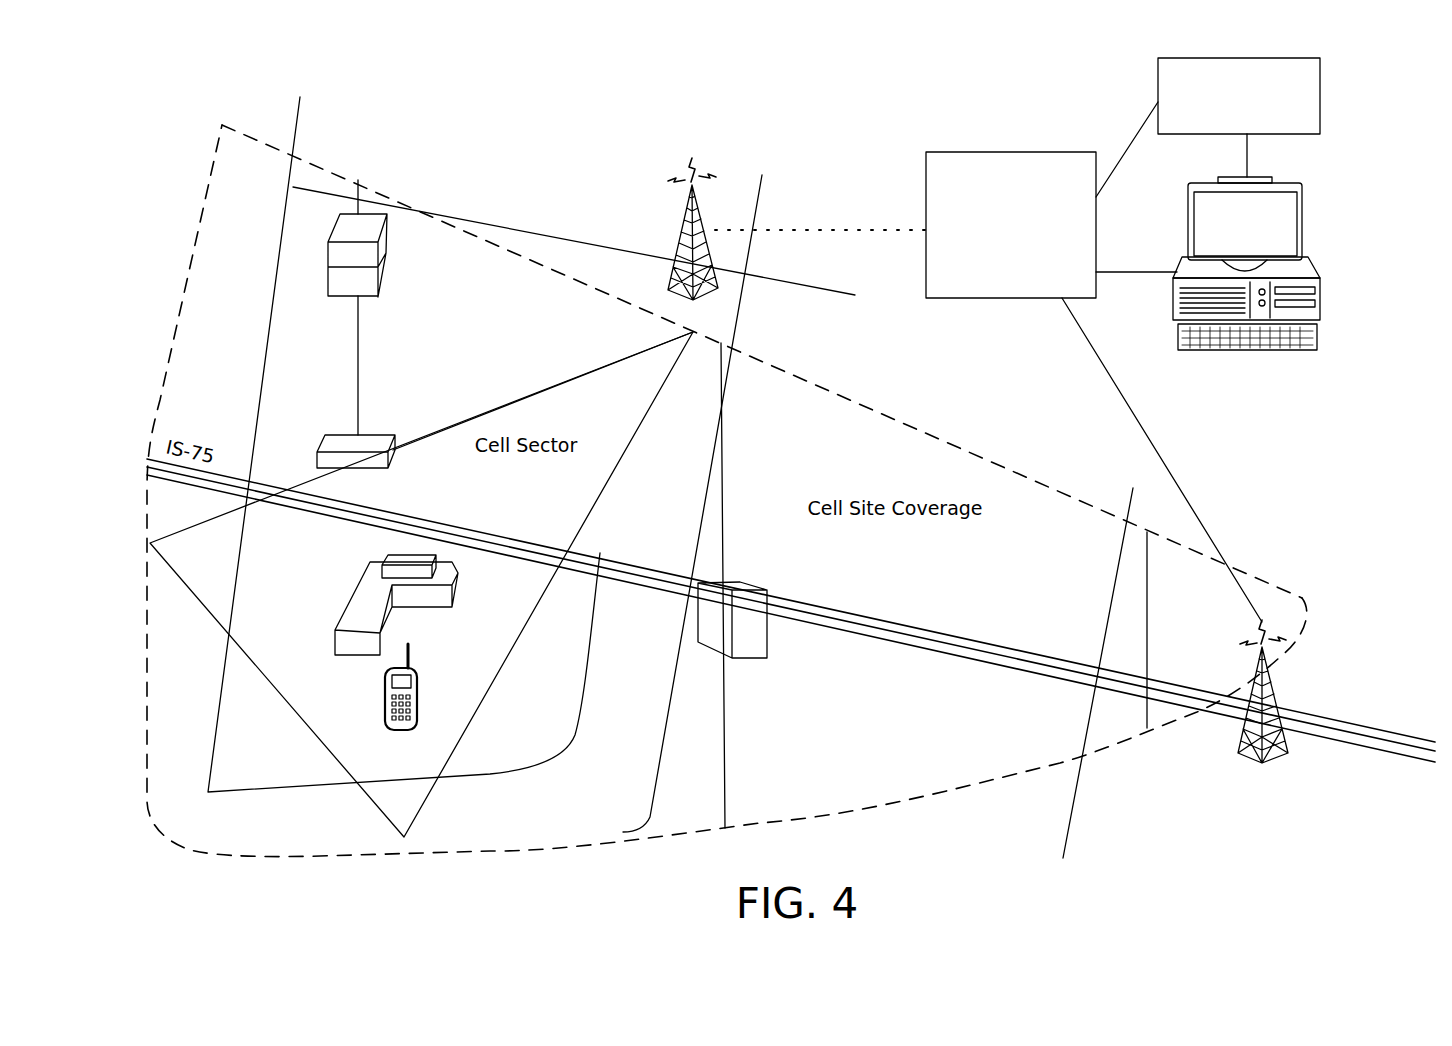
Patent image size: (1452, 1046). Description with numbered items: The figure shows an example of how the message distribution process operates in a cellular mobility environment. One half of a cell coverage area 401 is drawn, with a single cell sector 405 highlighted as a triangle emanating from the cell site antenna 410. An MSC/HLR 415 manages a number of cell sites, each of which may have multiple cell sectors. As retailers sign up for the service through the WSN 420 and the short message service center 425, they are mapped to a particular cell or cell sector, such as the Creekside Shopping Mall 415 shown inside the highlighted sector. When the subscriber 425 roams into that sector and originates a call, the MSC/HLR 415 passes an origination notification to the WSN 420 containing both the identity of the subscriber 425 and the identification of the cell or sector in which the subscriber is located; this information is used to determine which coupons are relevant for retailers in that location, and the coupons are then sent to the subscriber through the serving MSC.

The cell coverage area 401 is at (823, 802).
The cell sector 405 is at (407, 815).
The cell site antenna 410 is at (688, 201).
The MSC/HLR 415 is at (1028, 152).
The WSN 420 is at (1295, 178).
The short message service center 425 is at (1255, 58).